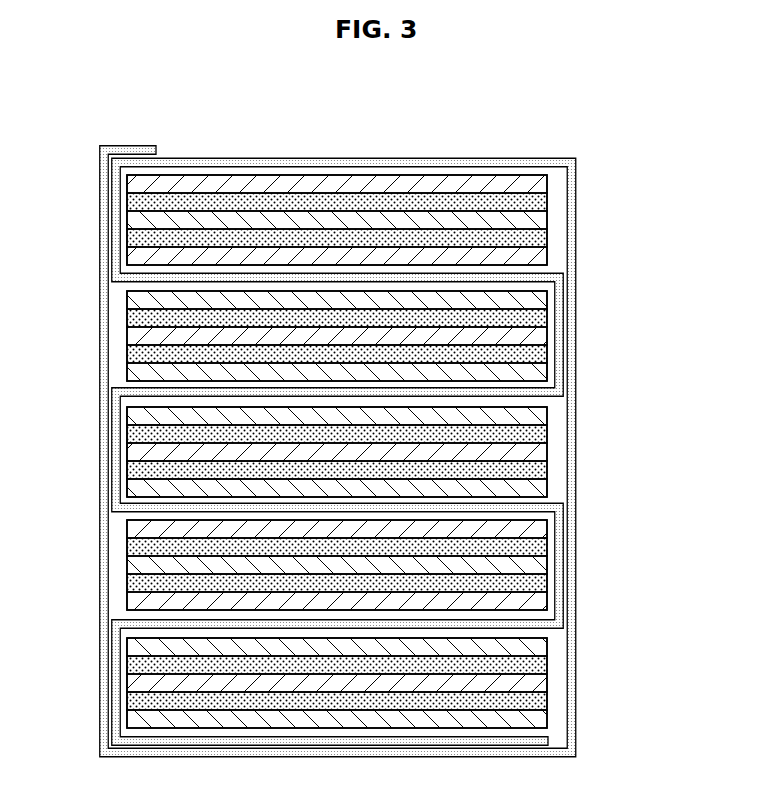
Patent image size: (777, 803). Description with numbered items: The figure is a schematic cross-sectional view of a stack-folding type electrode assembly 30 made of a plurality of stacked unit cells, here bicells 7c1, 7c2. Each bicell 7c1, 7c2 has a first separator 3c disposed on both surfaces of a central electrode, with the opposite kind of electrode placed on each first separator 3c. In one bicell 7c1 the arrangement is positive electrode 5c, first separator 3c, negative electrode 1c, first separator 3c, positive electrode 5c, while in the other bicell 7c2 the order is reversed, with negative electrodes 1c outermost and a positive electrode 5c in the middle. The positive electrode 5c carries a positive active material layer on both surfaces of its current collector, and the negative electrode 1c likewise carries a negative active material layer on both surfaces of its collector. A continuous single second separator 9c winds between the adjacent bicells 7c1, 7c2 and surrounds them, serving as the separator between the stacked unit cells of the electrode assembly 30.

The electrode assembly 30 is at (645, 131).
The second separator 9c is at (99, 295).
The bicell 7c1 is at (634, 173).
The bicell 7c2 is at (634, 289).
The negative electrode 1c is at (540, 220).
The first separator 3c is at (540, 202).
The positive electrode 5c is at (540, 184).